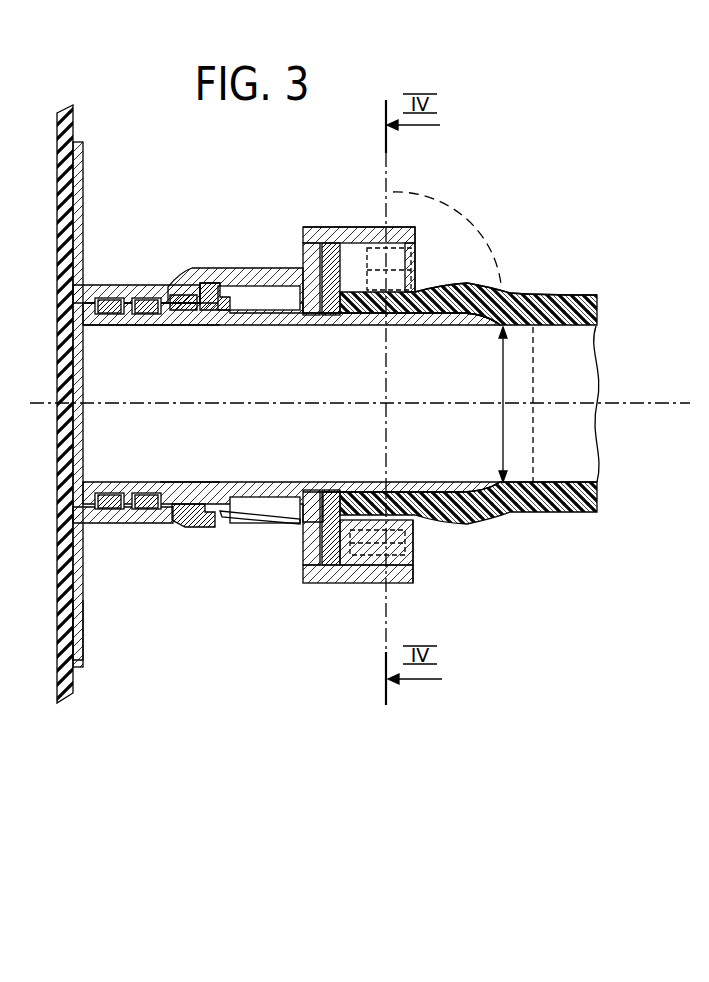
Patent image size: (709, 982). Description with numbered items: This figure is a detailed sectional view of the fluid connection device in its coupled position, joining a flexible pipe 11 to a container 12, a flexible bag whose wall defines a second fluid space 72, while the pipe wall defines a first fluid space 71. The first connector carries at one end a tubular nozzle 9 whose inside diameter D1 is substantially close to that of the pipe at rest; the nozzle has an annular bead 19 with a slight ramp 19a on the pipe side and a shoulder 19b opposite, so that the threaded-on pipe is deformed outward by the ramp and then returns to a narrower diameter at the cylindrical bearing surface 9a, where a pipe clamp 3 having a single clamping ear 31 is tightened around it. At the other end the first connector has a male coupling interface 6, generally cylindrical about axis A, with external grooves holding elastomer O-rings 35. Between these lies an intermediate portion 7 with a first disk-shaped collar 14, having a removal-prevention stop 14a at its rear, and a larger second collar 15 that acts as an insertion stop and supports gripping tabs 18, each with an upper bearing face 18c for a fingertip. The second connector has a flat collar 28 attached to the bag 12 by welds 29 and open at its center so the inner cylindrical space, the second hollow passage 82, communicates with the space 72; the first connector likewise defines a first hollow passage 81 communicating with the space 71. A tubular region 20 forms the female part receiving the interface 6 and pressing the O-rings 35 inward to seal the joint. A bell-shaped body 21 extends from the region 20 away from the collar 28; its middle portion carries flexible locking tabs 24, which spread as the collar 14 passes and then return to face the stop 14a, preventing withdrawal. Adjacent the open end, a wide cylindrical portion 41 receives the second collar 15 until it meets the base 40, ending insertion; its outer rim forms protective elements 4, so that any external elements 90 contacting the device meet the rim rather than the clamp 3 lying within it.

The pipe clamp 3 is at (415, 524).
The protective elements 4 is at (416, 217).
The coupling interface 6 is at (154, 331).
The intermediate portion 7 is at (262, 331).
The tubular nozzle 9 is at (405, 474).
The cylindrical bearing surface 9a is at (397, 322).
The flexible pipe 11 is at (585, 285).
The container 12 is at (69, 668).
The first disk-shaped collar 14 is at (213, 290).
The removal-prevention stop 14a is at (219, 514).
The second collar 15 is at (332, 253).
The gripping tabs 18 is at (353, 555).
The upper bearing face 18c is at (413, 553).
The annular bead 19 is at (493, 317).
The ramp 19a is at (528, 317).
The shoulder 19b is at (457, 316).
The tubular region 20 is at (124, 517).
The body 21 is at (257, 272).
The locking tabs 24 is at (258, 527).
The collar 28 is at (80, 200).
The welds 29 is at (78, 600).
The clamping ear 31 is at (402, 270).
The O-rings 35 is at (147, 300).
The base 40 is at (305, 253).
The cylindrical portion 41 is at (367, 240).
The first fluid space 71 is at (588, 355).
The second fluid space 72 is at (65, 378).
The first hollow passage 81 is at (473, 462).
The second hollow passage 82 is at (185, 460).
The external elements 90 is at (480, 243).
The inside diameter D1 is at (492, 404).
The axis A is at (620, 402).